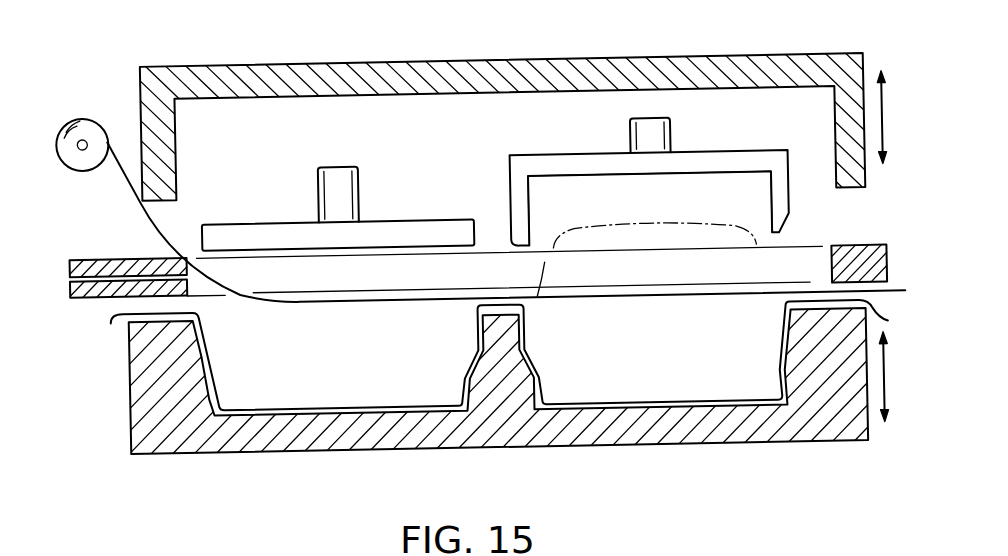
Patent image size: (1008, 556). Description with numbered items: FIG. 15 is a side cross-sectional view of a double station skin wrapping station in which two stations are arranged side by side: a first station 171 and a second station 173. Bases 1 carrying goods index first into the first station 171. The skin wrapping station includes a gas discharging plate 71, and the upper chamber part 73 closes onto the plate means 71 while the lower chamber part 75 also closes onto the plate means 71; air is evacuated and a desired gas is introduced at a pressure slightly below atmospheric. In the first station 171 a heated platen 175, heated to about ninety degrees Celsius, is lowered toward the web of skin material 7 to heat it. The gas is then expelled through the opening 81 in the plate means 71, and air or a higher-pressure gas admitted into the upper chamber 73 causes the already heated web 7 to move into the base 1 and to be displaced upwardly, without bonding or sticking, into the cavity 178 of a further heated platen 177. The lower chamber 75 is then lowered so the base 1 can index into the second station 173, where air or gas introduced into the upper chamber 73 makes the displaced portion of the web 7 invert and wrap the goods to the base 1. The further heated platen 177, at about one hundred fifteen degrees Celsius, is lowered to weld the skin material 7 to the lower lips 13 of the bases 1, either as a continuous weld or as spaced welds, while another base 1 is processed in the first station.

The base 1 is at (423, 422).
The web of skin material 7 is at (127, 175).
The lower lip 13 is at (197, 359).
The gas discharging plate 71 is at (862, 250).
The upper chamber part 73 is at (190, 61).
The lower chamber part 75 is at (817, 416).
The opening 81 is at (96, 291).
The first station 171 is at (407, 203).
The second station 173 is at (505, 170).
The heated platen 175 is at (242, 230).
The further heated platen 177 is at (747, 162).
The cavity 178 is at (592, 193).